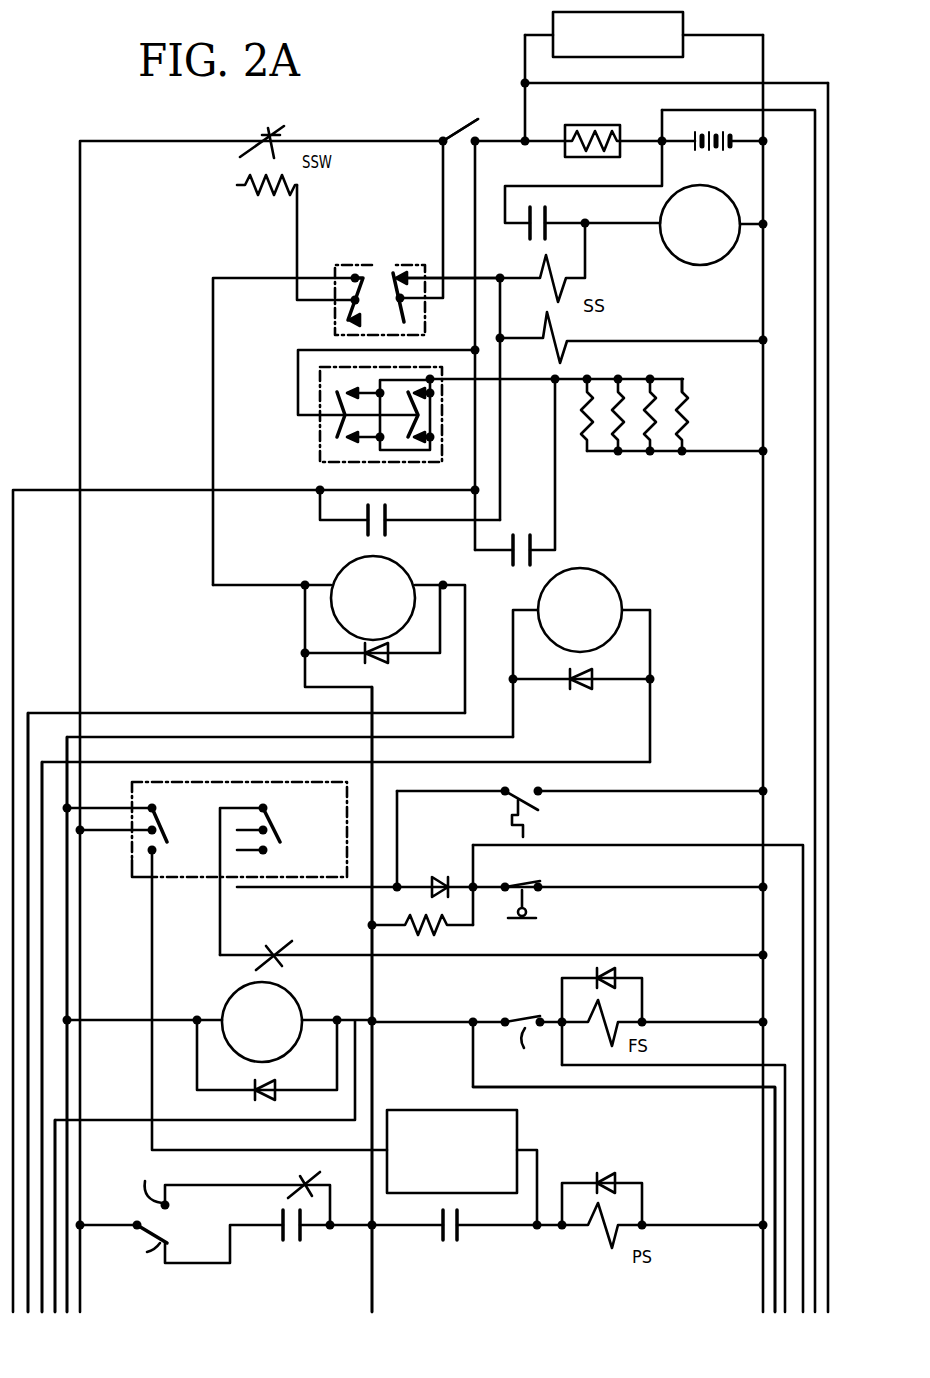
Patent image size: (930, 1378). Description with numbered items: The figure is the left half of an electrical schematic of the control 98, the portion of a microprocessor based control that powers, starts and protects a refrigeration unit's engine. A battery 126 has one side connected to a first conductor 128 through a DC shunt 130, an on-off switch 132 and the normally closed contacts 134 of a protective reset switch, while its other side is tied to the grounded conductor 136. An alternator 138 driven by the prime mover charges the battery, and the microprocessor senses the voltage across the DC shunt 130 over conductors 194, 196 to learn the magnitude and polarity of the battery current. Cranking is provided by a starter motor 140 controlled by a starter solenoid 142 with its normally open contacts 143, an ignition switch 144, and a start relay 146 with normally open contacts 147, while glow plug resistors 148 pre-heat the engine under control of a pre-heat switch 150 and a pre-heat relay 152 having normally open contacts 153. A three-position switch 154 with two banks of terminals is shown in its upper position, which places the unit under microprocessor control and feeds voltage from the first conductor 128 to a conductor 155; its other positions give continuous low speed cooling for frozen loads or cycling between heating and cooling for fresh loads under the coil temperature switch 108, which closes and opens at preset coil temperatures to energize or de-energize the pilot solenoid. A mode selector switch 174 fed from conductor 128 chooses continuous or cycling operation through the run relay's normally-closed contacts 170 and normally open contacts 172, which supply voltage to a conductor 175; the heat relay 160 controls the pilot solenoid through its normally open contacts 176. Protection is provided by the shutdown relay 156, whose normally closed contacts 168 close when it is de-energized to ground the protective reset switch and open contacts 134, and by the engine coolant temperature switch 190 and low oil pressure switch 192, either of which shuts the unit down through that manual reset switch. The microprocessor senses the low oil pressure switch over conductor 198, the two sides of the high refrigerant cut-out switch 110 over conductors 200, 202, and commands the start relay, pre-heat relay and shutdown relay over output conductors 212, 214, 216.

The control 98 is at (355, 122).
The coil temperature switch 108 is at (517, 1130).
The high refrigerant cut-out switch 110 is at (522, 1032).
The battery 126 is at (705, 152).
The first conductor 128 is at (80, 152).
The DC shunt 130 is at (597, 125).
The on-off switch 132 is at (467, 127).
The normally closed contacts 134 is at (266, 130).
The conductor 136 is at (764, 212).
The alternator 138 is at (683, 24).
The starter motor 140 is at (700, 266).
The starter solenoid 142 is at (534, 326).
The normally open contacts 143 is at (538, 216).
The ignition switch 144 is at (372, 266).
The start relay 146 is at (454, 576).
The normally open contacts 147 is at (364, 524).
The glow plug resistors 148 is at (684, 392).
The pre-heat switch 150 is at (320, 446).
The pre-heat relay 152 is at (657, 602).
The normally open contacts 153 is at (530, 540).
The three-position switch 154 is at (185, 880).
The conductor 155 is at (68, 996).
The shutdown relay 156 is at (355, 1004).
The heat relay 160 is at (515, 1272).
The normally closed contacts 168 is at (272, 944).
The normally-closed contacts 170 is at (302, 1186).
The normally open contacts 172 is at (294, 1242).
The mode selector switch 174 is at (114, 1209).
The conductor 175 is at (376, 1045).
The normally open contacts 176 is at (447, 1236).
The engine coolant temperature switch 190 is at (512, 806).
The low oil pressure switch 192 is at (536, 898).
The conductor 194 is at (778, 83).
The conductor 196 is at (780, 110).
The conductor 198 is at (688, 845).
The conductor 200 is at (445, 928).
The conductor 202 is at (700, 1088).
The conductor 212 is at (28, 1305).
The conductor 214 is at (42, 1290).
The conductor 216 is at (86, 1120).